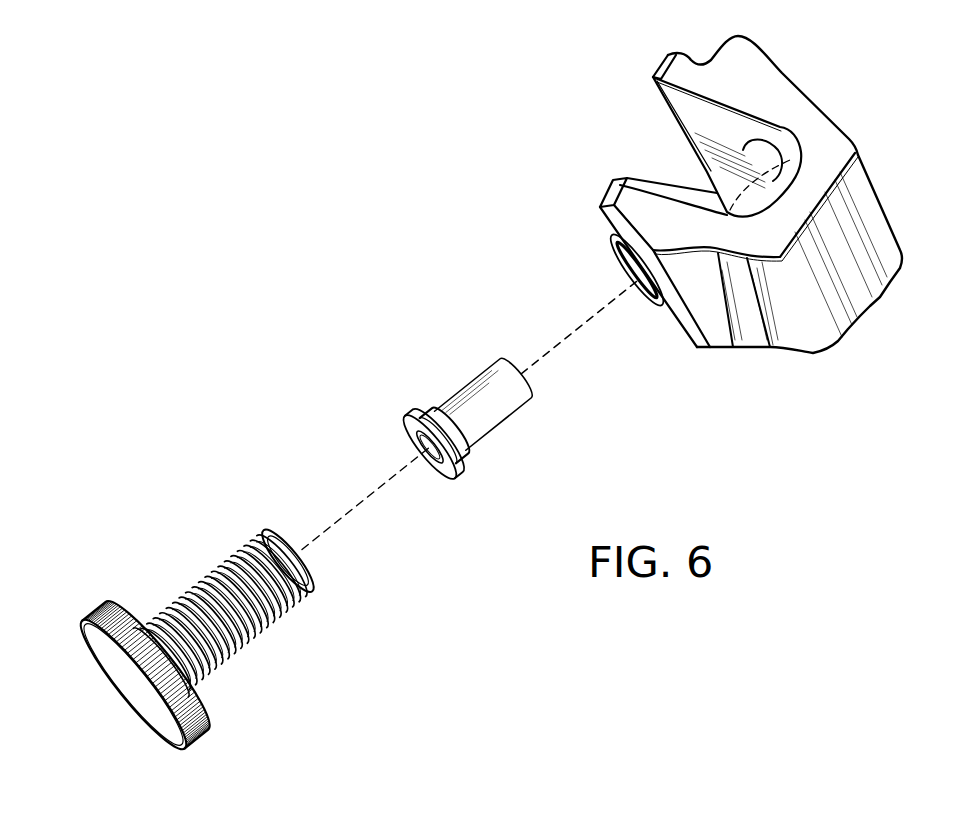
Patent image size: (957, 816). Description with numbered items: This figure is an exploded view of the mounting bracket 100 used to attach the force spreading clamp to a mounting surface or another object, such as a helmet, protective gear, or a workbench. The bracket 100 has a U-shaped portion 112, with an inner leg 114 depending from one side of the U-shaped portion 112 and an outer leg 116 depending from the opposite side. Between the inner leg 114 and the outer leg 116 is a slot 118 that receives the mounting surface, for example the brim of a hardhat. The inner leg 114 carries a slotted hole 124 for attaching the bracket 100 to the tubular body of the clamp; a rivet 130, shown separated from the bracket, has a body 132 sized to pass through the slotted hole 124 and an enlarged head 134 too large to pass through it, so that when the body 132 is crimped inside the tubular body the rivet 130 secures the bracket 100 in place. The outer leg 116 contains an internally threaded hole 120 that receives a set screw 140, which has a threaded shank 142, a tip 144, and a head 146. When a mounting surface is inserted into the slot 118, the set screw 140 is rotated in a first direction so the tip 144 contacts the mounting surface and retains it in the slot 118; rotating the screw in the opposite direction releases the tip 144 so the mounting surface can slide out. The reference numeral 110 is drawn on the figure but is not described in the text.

The mounting bracket 100 is at (405, 142).
The clamp body 110 is at (808, 351).
The U-shaped portion 112 is at (818, 195).
The inner leg 114 is at (775, 90).
The outer leg 116 is at (698, 236).
The slot 118 is at (635, 180).
The internally threaded hole 120 is at (647, 283).
The slotted hole 124 is at (690, 135).
The rivet 130 is at (489, 438).
The rivet body 132 is at (480, 398).
The enlarged head 134 is at (450, 470).
The set screw 140 is at (240, 657).
The threaded shank 142 is at (203, 572).
The tip 144 is at (307, 562).
The head 146 is at (103, 659).